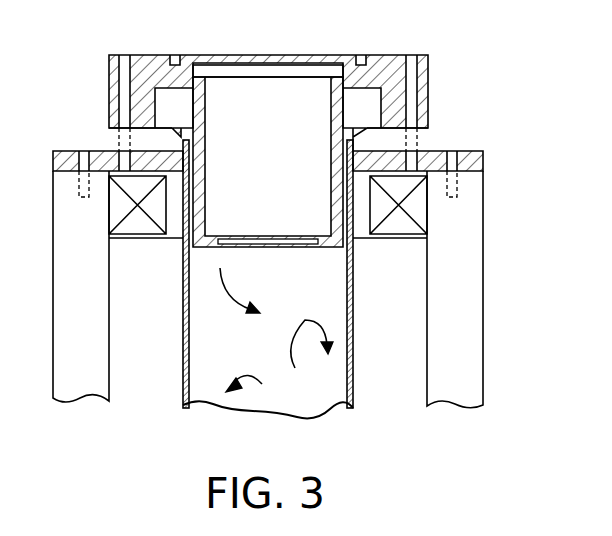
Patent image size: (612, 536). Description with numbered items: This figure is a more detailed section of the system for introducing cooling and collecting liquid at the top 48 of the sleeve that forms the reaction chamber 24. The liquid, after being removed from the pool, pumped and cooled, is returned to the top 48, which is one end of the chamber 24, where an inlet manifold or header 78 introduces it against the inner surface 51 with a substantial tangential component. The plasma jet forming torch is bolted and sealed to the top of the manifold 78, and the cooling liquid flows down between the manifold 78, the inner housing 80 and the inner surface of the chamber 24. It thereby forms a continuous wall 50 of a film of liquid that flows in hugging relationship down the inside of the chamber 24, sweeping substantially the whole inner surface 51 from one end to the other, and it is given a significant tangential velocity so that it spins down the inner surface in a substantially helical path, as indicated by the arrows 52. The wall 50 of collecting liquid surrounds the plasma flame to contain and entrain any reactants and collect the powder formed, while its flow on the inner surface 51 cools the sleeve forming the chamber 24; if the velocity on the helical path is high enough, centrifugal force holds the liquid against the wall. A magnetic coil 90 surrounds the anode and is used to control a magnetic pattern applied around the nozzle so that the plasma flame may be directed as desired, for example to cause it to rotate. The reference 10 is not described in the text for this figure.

The tubular housing 10 is at (271, 296).
The reaction chamber 24 is at (318, 388).
The top of the chamber 48 is at (383, 151).
The continuous wall of liquid film 50 is at (195, 346).
The inner surface of the reaction chamber 51 is at (193, 410).
The arrows 52 is at (232, 285).
The inlet manifold 78 is at (150, 55).
The inner housing 80 is at (205, 201).
The magnetic coil 90 is at (413, 210).